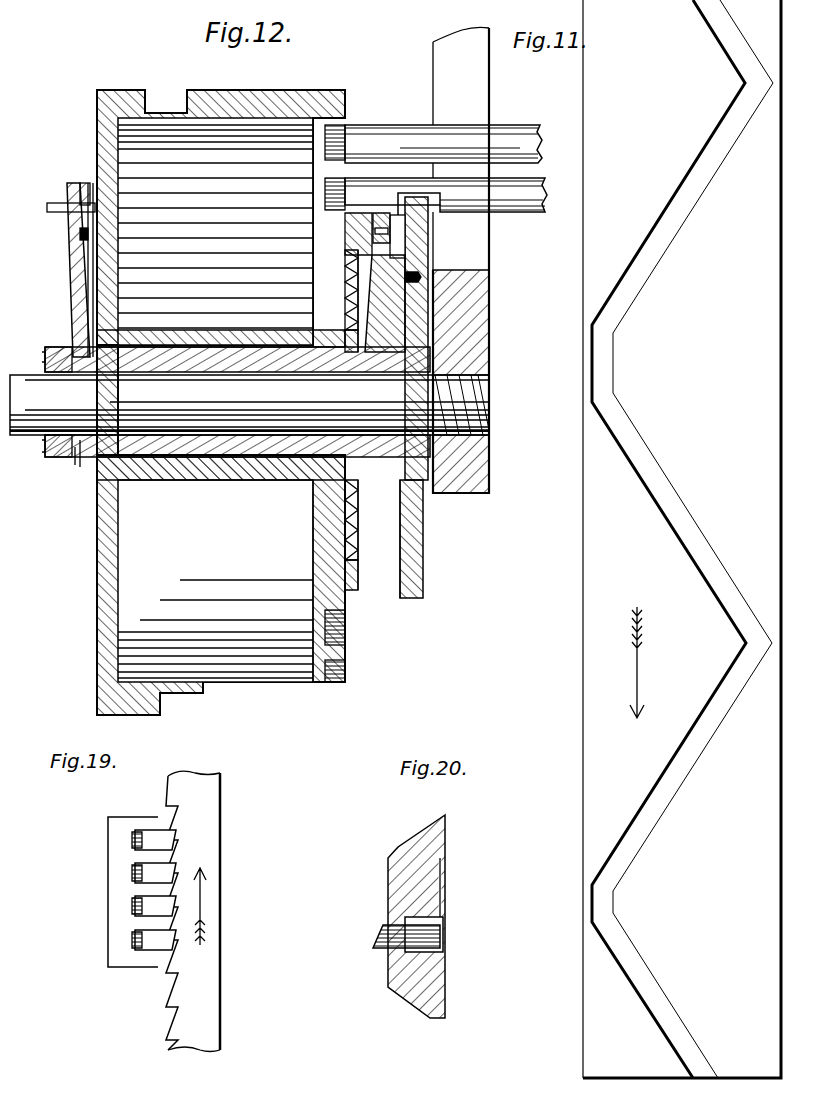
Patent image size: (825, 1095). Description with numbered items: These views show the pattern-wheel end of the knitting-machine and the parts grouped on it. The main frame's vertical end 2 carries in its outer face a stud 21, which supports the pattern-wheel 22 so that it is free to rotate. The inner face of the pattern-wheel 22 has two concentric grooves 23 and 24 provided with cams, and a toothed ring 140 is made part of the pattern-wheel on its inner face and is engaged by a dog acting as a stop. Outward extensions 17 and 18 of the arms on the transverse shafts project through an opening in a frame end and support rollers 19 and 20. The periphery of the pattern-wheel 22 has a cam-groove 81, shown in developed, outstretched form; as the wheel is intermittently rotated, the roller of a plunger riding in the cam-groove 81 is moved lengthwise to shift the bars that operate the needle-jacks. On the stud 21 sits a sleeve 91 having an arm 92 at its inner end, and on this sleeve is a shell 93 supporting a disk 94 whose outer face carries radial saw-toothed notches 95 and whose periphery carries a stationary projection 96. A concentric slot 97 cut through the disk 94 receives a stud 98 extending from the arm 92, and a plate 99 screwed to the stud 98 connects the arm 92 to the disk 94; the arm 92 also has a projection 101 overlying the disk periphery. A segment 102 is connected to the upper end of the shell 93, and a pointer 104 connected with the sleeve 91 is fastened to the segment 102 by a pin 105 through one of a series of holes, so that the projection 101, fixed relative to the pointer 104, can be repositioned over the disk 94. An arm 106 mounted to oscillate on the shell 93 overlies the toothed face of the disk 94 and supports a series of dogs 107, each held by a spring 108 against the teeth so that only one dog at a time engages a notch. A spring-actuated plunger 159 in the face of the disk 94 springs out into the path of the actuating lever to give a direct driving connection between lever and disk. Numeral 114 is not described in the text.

In FIG. 12, the vertical end 2 is at (461, 260).
In FIG. 12, the outward extension 17 is at (446, 195).
In FIG. 12, the outward extension 18 is at (443, 144).
In FIG. 12, the roller 19 is at (343, 193).
In FIG. 12, the roller 20 is at (343, 141).
In FIG. 12, the stud 21 is at (249, 405).
In FIG. 12, the pattern-wheel 22 is at (215, 376).
In FIG. 11, the pattern-wheel 22 is at (693, 539).
In FIG. 12, the concentric groove 23 is at (344, 627).
In FIG. 12, the concentric groove 24 is at (322, 413).
In FIG. 12, the cam-groove 81 is at (221, 402).
In FIG. 11, the cam-groove 81 is at (669, 539).
In FIG. 12, the sleeve 91 is at (301, 355).
In FIG. 12, the arm 92 is at (430, 244).
In FIG. 12, the shell 93 is at (193, 350).
In FIG. 12, the disk 94 is at (406, 236).
In FIG. 19, the disk 94 is at (193, 911).
In FIG. 20, the disk 94 is at (416, 916).
In FIG. 12, the saw-toothed notches 95 is at (400, 539).
In FIG. 19, the saw-toothed notches 95 is at (148, 992).
In FIG. 12, the stationary projection 96 is at (390, 279).
In FIG. 12, the concentric slot 97 is at (461, 381).
In FIG. 12, the stud 98 is at (420, 275).
In FIG. 12, the plate 99 is at (375, 282).
In FIG. 12, the projection 101 is at (419, 198).
In FIG. 12, the segment 102 is at (89, 205).
In FIG. 12, the pointer 104 is at (71, 270).
In FIG. 12, the pin 105 is at (70, 200).
In FIG. 19, the arm 106 is at (120, 892).
In FIG. 12, the dogs 107 is at (372, 228).
In FIG. 19, the dogs 107 is at (154, 890).
In FIG. 12, the spring 108 is at (355, 291).
In FIG. 12, the housing wall 114 is at (337, 403).
In FIG. 12, the ring 140 is at (360, 568).
In FIG. 20, the spring-actuated plunger 159 is at (395, 934).